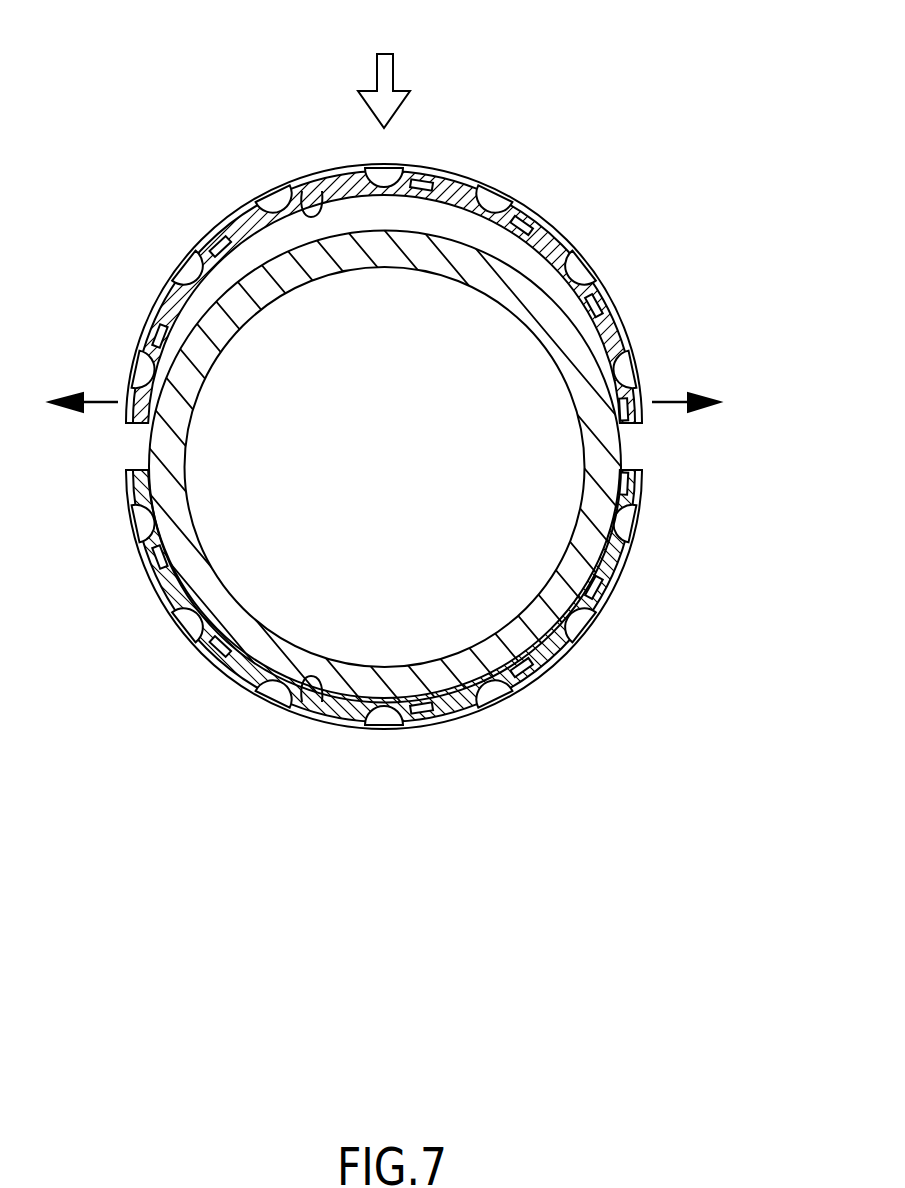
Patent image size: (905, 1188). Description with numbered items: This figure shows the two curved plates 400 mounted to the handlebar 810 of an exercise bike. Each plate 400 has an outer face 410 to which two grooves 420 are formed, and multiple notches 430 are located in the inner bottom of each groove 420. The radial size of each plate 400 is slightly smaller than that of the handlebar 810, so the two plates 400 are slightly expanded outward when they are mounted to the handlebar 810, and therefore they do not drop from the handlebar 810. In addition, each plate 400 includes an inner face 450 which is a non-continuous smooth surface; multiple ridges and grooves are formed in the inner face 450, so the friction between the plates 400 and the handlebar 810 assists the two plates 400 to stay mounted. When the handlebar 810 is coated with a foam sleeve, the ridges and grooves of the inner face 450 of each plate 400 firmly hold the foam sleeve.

The plate 400 is at (553, 137).
The outer face 410 is at (207, 236).
The groove 420 is at (563, 237).
The notch 430 is at (497, 200).
The inner face 450 is at (314, 190).
The handlebar 810 is at (612, 448).